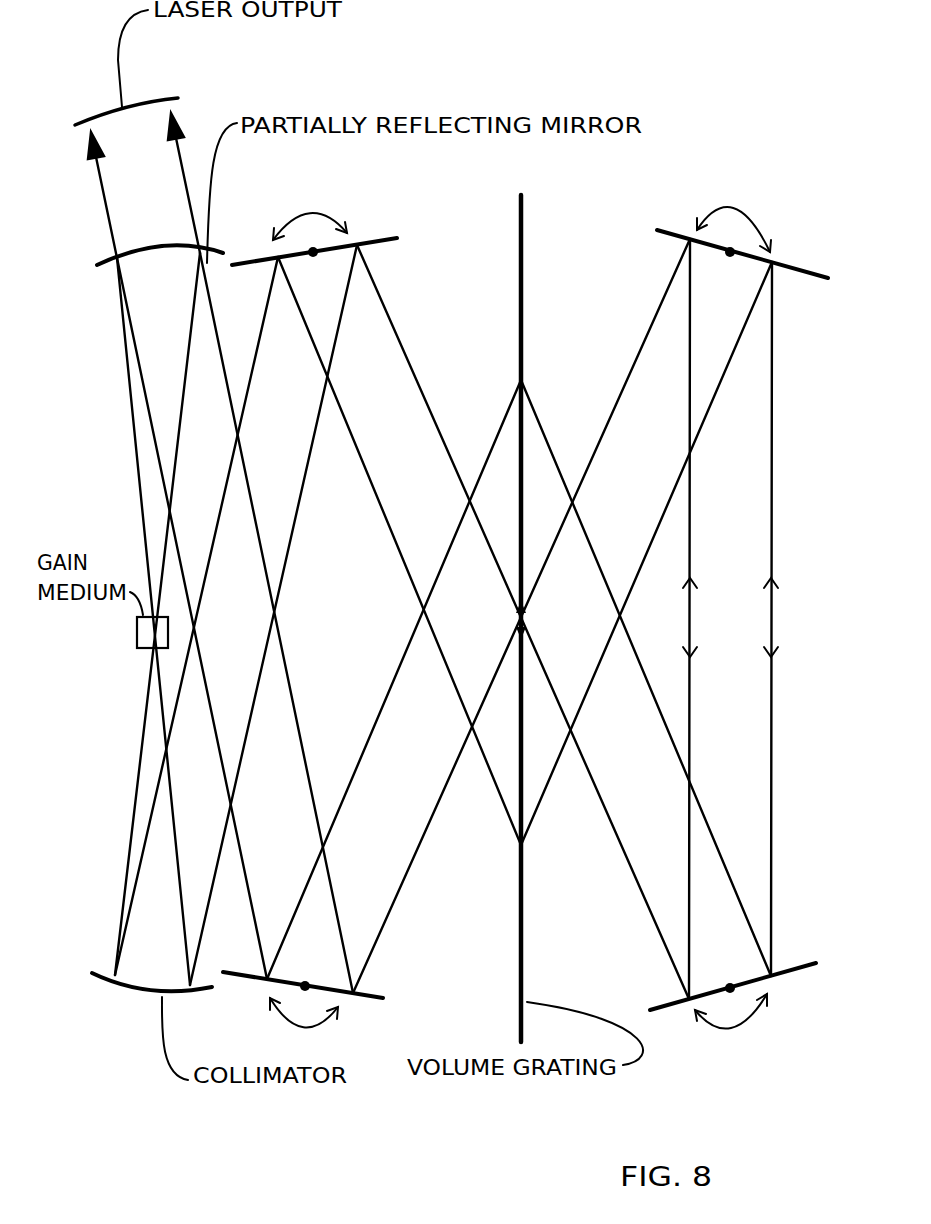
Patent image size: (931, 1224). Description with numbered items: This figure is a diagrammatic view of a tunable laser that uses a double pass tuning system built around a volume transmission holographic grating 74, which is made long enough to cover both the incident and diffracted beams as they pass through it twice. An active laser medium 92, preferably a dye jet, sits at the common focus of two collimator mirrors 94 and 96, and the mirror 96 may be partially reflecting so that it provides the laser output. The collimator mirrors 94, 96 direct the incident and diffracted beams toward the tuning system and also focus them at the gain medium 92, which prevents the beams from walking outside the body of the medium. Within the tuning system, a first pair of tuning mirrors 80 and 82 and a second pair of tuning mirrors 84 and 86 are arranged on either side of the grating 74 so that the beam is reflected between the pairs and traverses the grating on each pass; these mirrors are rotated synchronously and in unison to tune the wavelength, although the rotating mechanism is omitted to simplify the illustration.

The volume transmission holographic grating 74 is at (532, 255).
The tuning mirror 80 is at (397, 243).
The tuning mirror 82 is at (672, 235).
The tuning mirror 84 is at (648, 1005).
The tuning mirror 86 is at (385, 992).
The active laser medium 92 is at (140, 652).
The collimator mirror 94 is at (138, 998).
The collimator mirror 96 is at (227, 248).